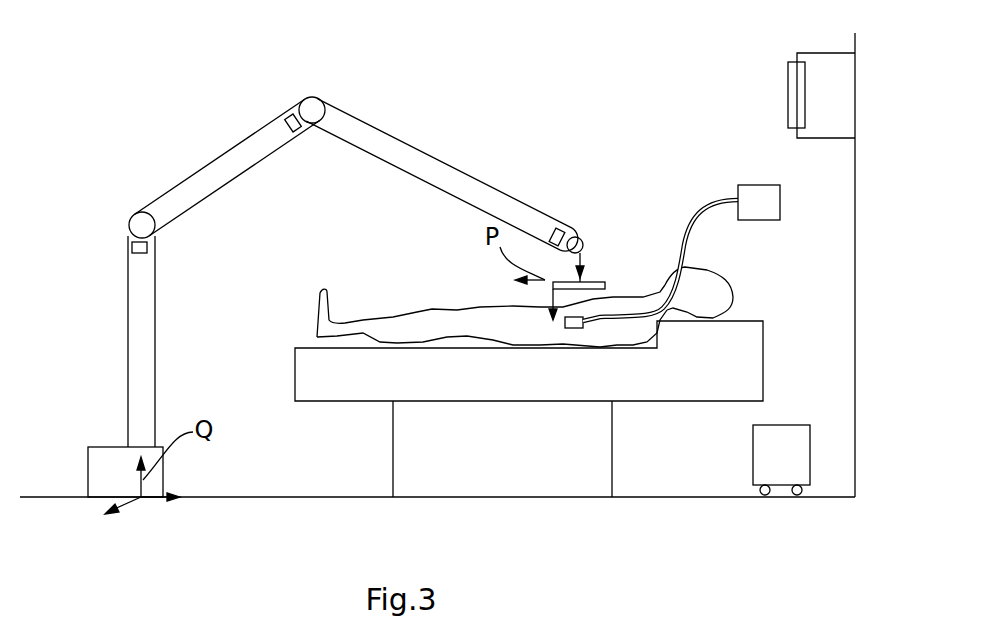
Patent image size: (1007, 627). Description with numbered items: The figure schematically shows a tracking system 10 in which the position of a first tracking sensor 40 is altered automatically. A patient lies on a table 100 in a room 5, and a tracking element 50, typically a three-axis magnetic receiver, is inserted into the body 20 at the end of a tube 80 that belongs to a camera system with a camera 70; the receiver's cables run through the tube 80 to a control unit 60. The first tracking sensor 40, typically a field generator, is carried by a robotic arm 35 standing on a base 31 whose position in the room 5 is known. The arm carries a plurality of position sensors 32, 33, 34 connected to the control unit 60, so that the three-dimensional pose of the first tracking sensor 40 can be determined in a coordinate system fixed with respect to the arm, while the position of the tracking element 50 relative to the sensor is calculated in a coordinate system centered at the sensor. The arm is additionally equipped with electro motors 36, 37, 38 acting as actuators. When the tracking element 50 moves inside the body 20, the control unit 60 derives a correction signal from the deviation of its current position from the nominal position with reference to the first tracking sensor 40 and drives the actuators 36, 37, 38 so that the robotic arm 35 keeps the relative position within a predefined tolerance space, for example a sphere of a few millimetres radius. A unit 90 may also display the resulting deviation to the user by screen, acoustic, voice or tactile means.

The room 5 is at (248, 502).
The tracking system 10 is at (54, 41).
The body 20 is at (318, 322).
The base 31 is at (98, 472).
The position sensor 32 is at (284, 112).
The position sensor 33 is at (558, 228).
The position sensor 34 is at (130, 248).
The robotic arm 35 is at (438, 172).
The electro motor 36 is at (136, 222).
The electro motor 37 is at (314, 108).
The electro motor 38 is at (577, 238).
The first tracking sensor 40 is at (615, 283).
The tracking element 50 is at (575, 330).
The control unit 60 is at (788, 442).
The camera 70 is at (752, 185).
The tube 80 is at (697, 218).
The unit 90 is at (793, 88).
The table 100 is at (753, 345).